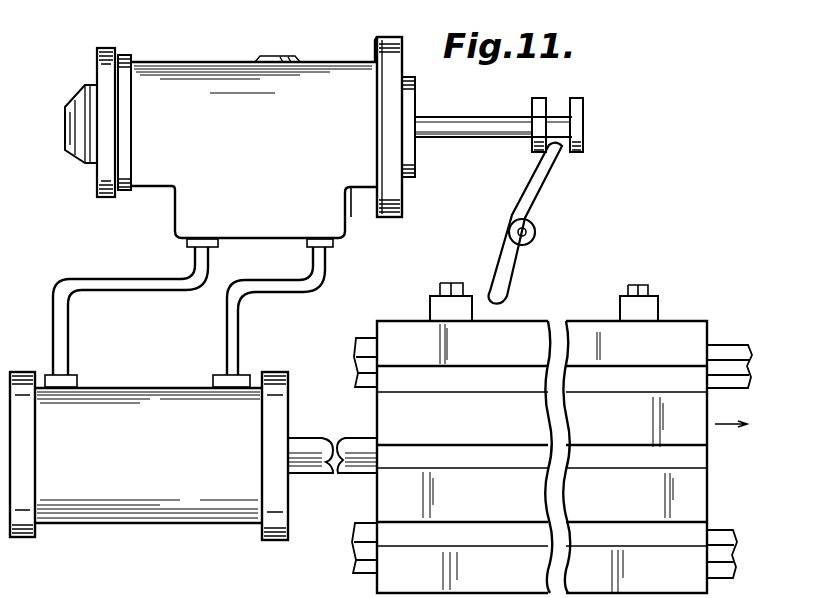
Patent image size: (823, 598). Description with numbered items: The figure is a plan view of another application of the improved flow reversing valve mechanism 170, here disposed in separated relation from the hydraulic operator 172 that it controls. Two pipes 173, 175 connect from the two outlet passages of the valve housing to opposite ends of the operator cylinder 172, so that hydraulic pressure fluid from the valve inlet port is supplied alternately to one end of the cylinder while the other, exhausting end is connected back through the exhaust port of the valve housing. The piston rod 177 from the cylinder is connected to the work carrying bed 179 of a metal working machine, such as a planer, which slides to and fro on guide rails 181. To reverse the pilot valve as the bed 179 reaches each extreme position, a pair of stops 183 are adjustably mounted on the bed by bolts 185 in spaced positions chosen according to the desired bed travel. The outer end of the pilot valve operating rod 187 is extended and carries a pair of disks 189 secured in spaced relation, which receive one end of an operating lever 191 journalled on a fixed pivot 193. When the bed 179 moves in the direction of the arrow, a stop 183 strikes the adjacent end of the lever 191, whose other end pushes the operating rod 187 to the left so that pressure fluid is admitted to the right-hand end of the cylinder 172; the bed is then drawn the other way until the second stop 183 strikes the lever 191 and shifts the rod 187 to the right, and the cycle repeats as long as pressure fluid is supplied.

The reversing valve mechanism 170 is at (177, 83).
The hydraulic operator 172 is at (125, 512).
The pipe 173 is at (137, 287).
The pipe 175 is at (326, 275).
The piston rod 177 is at (307, 443).
The work carrying bed 179 is at (692, 332).
The guide rails 181 is at (730, 348).
The stops 183 is at (430, 302).
The bolts 185 is at (640, 285).
The pilot valve operating rod 187 is at (475, 113).
The disks 189 is at (575, 90).
The operating lever 191 is at (540, 190).
The fixed pivot 193 is at (532, 231).